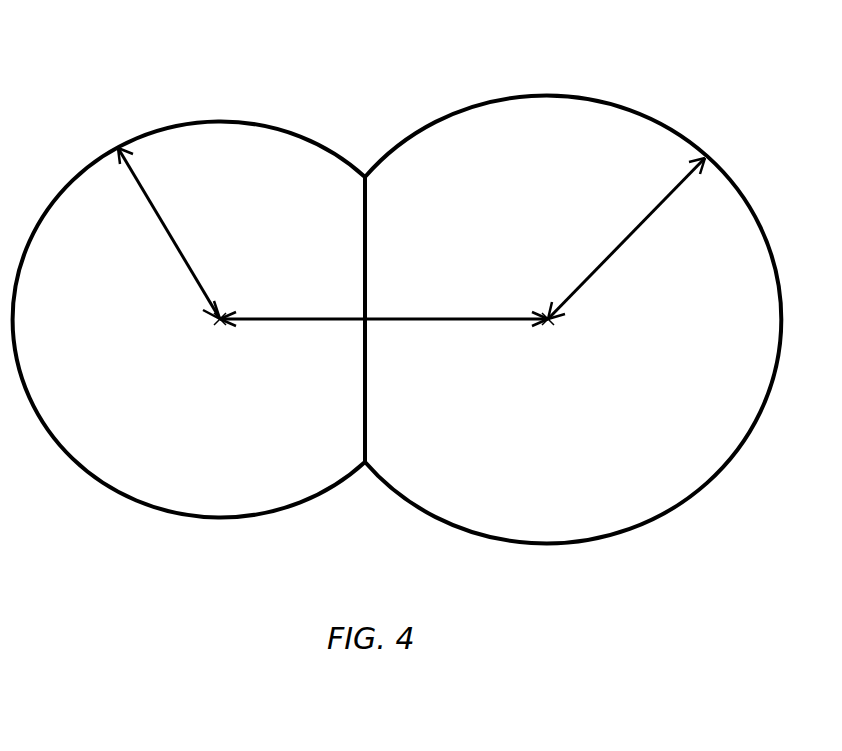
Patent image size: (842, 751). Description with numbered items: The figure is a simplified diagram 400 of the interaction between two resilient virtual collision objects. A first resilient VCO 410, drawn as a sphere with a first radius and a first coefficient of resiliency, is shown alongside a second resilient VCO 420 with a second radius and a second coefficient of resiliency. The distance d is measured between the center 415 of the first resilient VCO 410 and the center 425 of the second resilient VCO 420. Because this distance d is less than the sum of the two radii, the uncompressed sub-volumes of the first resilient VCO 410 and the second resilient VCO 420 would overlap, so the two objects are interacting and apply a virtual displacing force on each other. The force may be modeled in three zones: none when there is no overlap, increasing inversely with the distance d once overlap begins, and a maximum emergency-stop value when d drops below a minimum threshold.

The diagram of overlapping spheres 400 is at (97, 56).
The first resilient virtual collision object 410 is at (623, 534).
The center of first resilient VCO 415 is at (551, 323).
The second resilient virtual collision object 420 is at (162, 509).
The center of second resilient VCO 425 is at (217, 324).